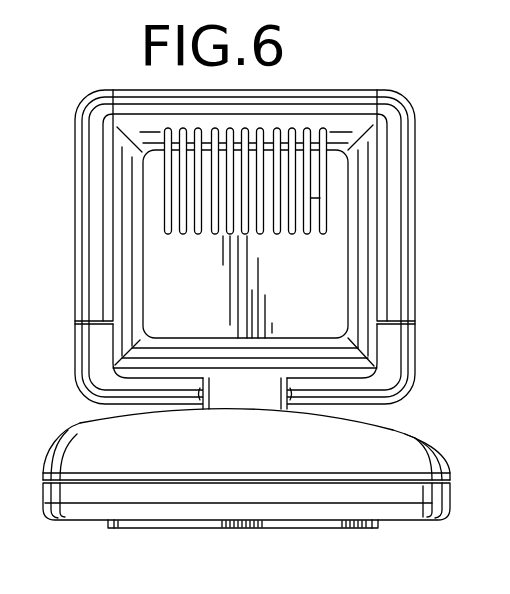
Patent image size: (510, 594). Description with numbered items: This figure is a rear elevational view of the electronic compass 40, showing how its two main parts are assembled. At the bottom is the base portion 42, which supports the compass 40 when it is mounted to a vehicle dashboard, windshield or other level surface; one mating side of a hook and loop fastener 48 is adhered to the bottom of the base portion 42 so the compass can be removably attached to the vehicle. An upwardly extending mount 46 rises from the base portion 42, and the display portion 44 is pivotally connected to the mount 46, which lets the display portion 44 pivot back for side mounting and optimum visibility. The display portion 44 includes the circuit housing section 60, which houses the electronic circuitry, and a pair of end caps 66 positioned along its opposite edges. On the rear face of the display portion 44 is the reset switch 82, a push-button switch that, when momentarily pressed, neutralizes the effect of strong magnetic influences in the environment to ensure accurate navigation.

The electronic compass 40 is at (357, 64).
The base portion 42 is at (442, 433).
The display portion 44 is at (430, 145).
The mount 46 is at (233, 400).
The hook and loop fastener 48 is at (286, 529).
The circuit housing section 60 is at (144, 104).
The end caps 66 is at (84, 165).
The reset switch 82 is at (323, 228).